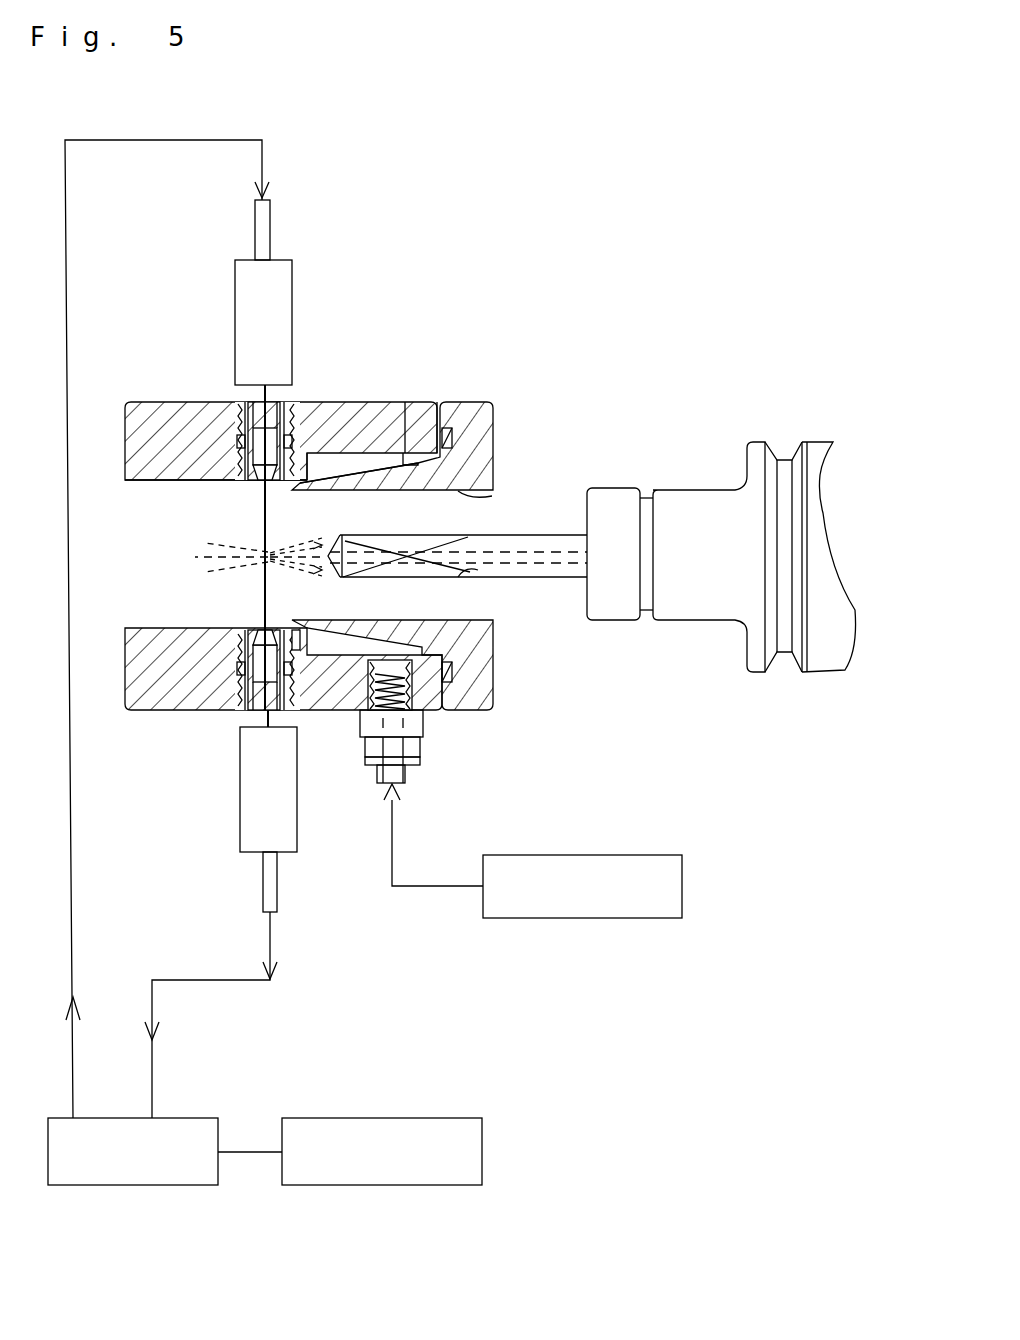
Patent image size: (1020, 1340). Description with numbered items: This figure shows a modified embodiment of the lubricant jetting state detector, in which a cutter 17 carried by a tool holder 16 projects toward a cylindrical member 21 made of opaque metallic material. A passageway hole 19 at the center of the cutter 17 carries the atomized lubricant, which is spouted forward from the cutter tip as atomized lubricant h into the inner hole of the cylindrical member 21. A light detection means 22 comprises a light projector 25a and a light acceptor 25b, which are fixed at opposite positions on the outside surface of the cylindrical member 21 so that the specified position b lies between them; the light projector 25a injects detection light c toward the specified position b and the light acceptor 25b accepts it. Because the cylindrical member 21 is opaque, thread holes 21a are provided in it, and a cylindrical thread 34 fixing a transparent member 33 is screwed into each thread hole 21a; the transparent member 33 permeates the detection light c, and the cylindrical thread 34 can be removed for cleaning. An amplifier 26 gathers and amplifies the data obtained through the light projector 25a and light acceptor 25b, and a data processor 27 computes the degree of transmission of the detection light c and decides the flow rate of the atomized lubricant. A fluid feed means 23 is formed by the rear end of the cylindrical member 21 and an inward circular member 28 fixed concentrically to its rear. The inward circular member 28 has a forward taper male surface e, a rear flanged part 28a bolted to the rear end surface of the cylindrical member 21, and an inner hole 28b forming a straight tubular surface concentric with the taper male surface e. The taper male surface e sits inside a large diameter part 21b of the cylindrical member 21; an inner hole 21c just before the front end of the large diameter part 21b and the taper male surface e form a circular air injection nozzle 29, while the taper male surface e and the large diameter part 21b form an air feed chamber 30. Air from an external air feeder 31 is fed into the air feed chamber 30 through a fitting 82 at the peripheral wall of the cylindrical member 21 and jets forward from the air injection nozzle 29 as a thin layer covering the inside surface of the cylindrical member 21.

The tool holder 16 is at (757, 448).
The cutter 17 is at (558, 578).
The passageway hole 19 is at (502, 568).
The cylindrical member 21 is at (165, 415).
The thread hole 21a is at (300, 400).
The large diameter part 21b is at (347, 455).
The inner hole 21c is at (147, 482).
The light detection means 22 is at (385, 1110).
The fluid feed means 23 is at (455, 925).
The light projector 25a is at (275, 270).
The light acceptor 25b is at (244, 845).
The amplifier 26 is at (172, 1187).
The data processor 27 is at (452, 1187).
The inward circular member 28 is at (497, 455).
The flanged part 28a is at (480, 700).
The inner hole 28b is at (465, 496).
The air injection nozzle 29 is at (293, 632).
The air feed chamber 30 is at (368, 458).
The air feeder 31 is at (640, 920).
The transparent member 33 is at (285, 482).
The cylindrical thread 34 is at (235, 400).
The air fitting 82 is at (415, 695).
The atomized lubricant h is at (212, 543).
The specified position b is at (250, 555).
The detection light c is at (265, 603).
The taper male surface e is at (405, 435).